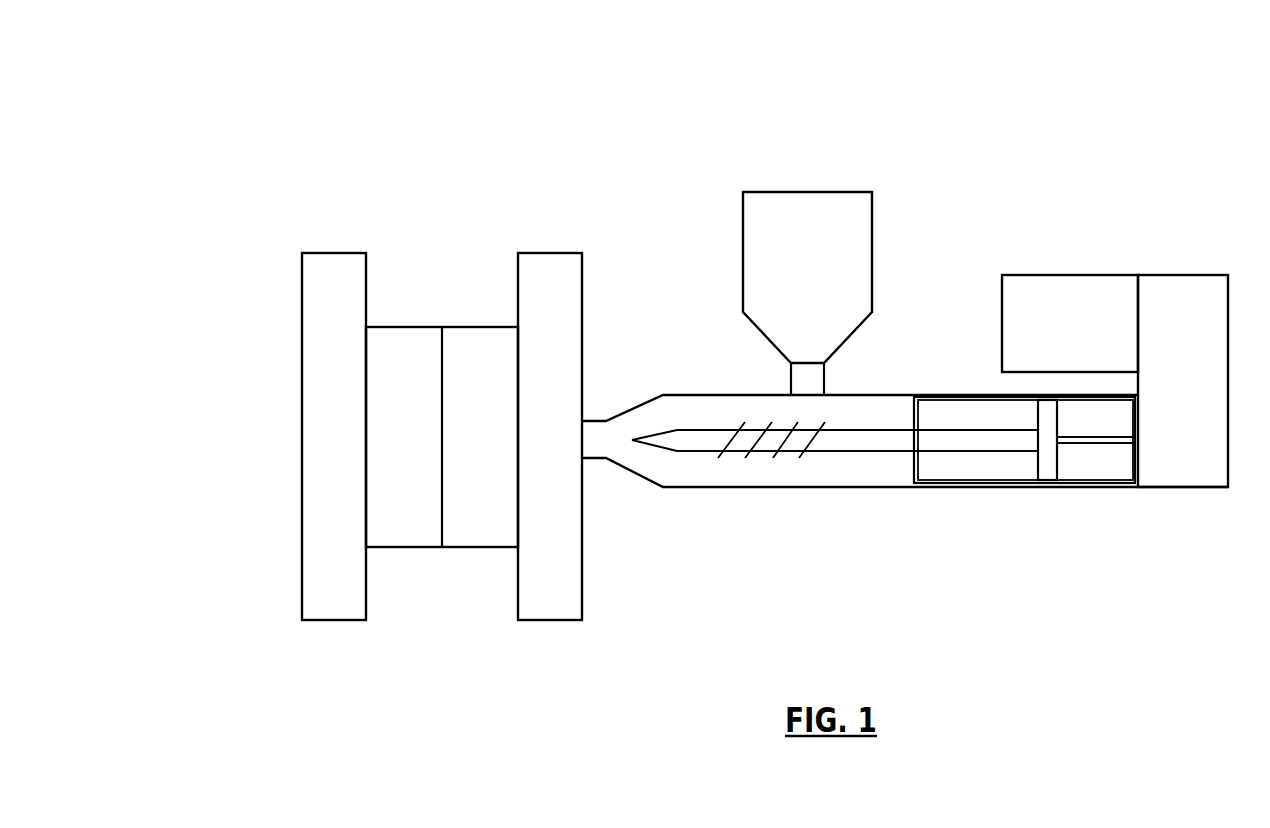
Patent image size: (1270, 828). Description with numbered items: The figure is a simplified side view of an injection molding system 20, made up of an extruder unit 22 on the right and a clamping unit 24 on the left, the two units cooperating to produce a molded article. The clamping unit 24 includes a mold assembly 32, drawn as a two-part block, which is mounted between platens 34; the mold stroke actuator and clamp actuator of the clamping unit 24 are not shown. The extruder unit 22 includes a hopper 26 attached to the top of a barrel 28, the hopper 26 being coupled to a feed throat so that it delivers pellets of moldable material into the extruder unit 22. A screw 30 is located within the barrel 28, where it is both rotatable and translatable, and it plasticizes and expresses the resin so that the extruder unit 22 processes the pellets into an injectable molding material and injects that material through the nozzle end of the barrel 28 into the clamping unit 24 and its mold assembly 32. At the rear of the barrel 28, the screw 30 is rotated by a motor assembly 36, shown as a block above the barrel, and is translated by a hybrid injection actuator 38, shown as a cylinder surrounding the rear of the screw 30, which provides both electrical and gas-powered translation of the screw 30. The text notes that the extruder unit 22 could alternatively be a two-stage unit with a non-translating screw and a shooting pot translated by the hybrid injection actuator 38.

The injection molding system 20 is at (232, 212).
The extruder unit 22 is at (883, 145).
The clamping unit 24 is at (297, 185).
The hopper 26 is at (778, 192).
The barrel 28 is at (690, 395).
The screw 30 is at (757, 457).
The mold assembly 32 is at (405, 327).
The platens 34 is at (582, 278).
The motor assembly 36 is at (1040, 275).
The hybrid injection actuator 38 is at (967, 487).